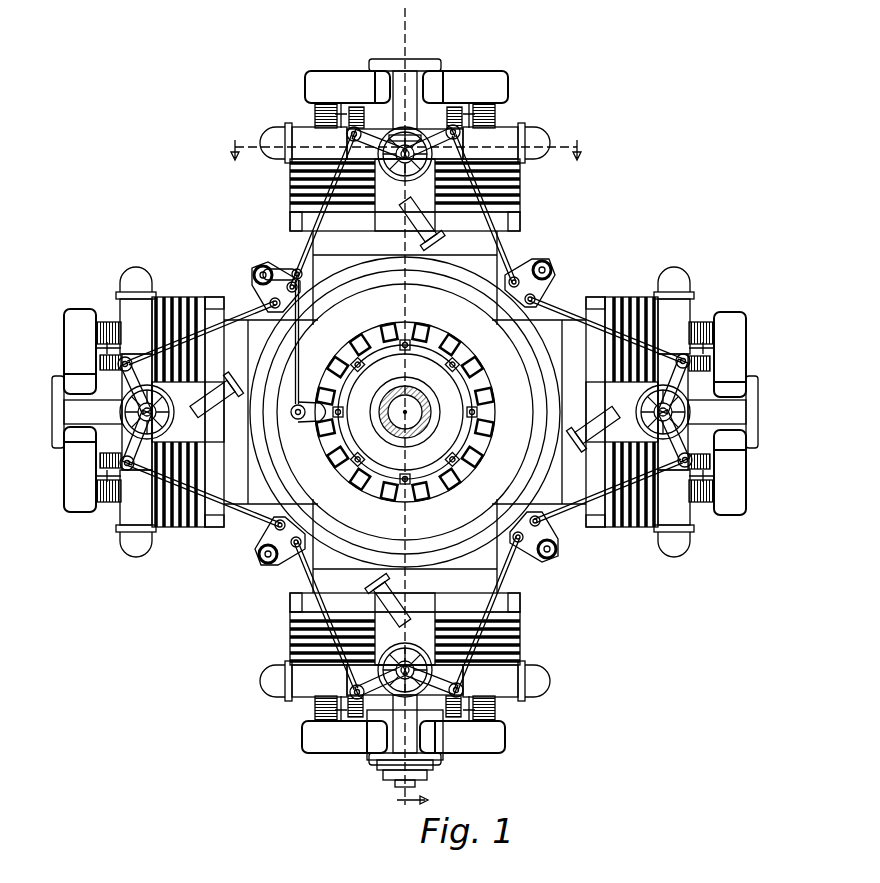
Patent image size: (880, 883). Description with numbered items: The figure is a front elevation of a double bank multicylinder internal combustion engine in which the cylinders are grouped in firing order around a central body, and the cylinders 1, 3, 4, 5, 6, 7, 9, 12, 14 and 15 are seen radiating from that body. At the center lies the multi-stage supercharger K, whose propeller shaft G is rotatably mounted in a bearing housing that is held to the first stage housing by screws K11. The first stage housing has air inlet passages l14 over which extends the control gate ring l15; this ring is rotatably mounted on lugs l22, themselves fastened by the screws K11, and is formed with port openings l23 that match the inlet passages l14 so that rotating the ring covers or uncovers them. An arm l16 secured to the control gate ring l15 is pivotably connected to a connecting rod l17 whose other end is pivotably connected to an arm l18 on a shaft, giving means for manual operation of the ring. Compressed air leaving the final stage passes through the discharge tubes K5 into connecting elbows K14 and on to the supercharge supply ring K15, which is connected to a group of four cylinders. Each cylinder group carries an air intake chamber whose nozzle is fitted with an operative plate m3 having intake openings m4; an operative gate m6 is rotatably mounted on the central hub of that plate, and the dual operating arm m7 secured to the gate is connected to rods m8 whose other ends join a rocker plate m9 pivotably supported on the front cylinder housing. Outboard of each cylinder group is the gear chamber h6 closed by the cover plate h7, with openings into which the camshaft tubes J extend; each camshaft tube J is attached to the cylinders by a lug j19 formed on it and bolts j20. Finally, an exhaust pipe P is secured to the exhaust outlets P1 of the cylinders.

The cylinder 1 is at (300, 193).
The cylinder 3 is at (412, 420).
The cylinder 4 is at (520, 193).
The cylinder 5 is at (403, 150).
The cylinder 6 is at (612, 300).
The cylinder 7 is at (630, 525).
The cylinder 9 is at (520, 635).
The cylinder 12 is at (300, 640).
The cylinder 14 is at (200, 525).
The cylinder 15 is at (200, 300).
The camshaft tube J is at (497, 755).
The lug j19 is at (500, 722).
The bolt j20 is at (480, 106).
The exhaust pipe P is at (548, 685).
The exhaust outlet P1 is at (515, 700).
The gear chamber h6 is at (400, 750).
The cover plate h7 is at (757, 400).
The operative plate m3 is at (665, 410).
The intake opening m4 is at (680, 420).
The operative gate m6 is at (393, 140).
The dual operating arm m7 is at (450, 720).
The rod m8 is at (315, 575).
The rocker plate m9 is at (262, 556).
The multi-stage supercharger K is at (350, 515).
The discharge tube K5 is at (500, 240).
The screw K11 is at (455, 480).
The connecting elbow K14 is at (500, 590).
The supercharge supply ring K15 is at (505, 605).
The propeller shaft G is at (430, 405).
The air inlet passage l14 is at (480, 440).
The control gate ring l15 is at (405, 495).
The arm l16 is at (305, 420).
The connecting rod l17 is at (300, 345).
The arm l18 is at (285, 272).
The lug l22 is at (478, 412).
The port opening l23 is at (400, 340).